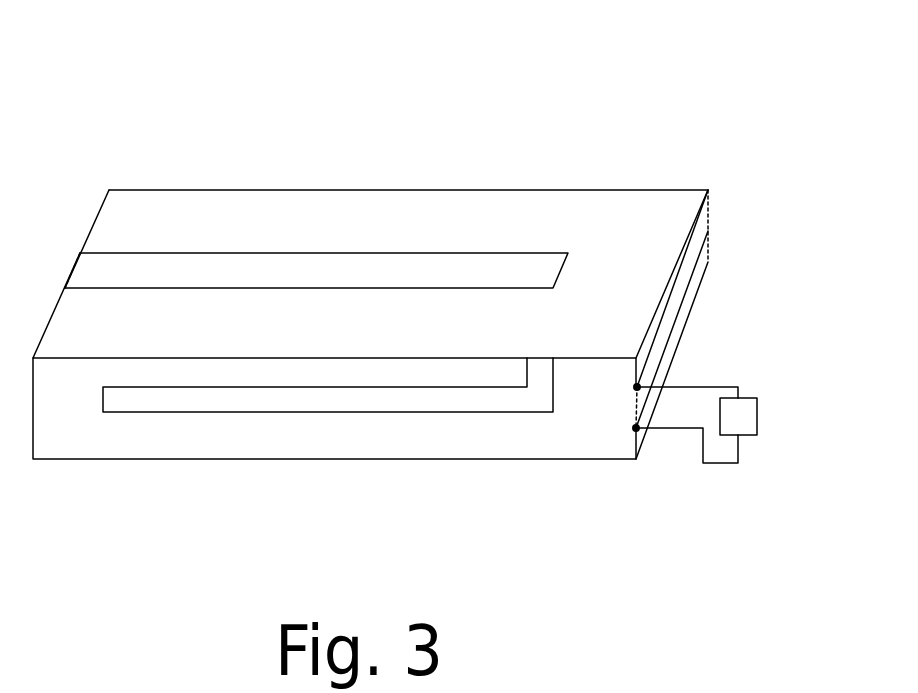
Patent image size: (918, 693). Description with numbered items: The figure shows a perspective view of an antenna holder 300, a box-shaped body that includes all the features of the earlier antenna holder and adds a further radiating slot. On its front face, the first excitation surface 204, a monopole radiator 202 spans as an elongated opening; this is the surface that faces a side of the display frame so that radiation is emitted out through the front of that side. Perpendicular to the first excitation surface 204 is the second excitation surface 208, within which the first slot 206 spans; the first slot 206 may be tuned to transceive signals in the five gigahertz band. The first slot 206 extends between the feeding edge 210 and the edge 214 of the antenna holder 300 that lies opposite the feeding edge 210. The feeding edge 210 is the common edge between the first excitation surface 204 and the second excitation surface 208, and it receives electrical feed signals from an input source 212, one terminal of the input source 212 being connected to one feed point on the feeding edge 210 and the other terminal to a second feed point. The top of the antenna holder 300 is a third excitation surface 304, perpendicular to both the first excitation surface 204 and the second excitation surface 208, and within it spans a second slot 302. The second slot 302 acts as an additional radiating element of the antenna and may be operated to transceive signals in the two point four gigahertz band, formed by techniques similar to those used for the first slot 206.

The antenna holder 300 is at (322, 94).
The second slot 302 is at (413, 270).
The third excitation surface 304 is at (607, 205).
The edge 214 is at (712, 213).
The second excitation surface 208 is at (662, 307).
The first slot 206 is at (658, 352).
The feeding edge 210 is at (639, 437).
The input source 212 is at (737, 417).
The first excitation surface 204 is at (122, 437).
The monopole radiator 202 is at (523, 397).